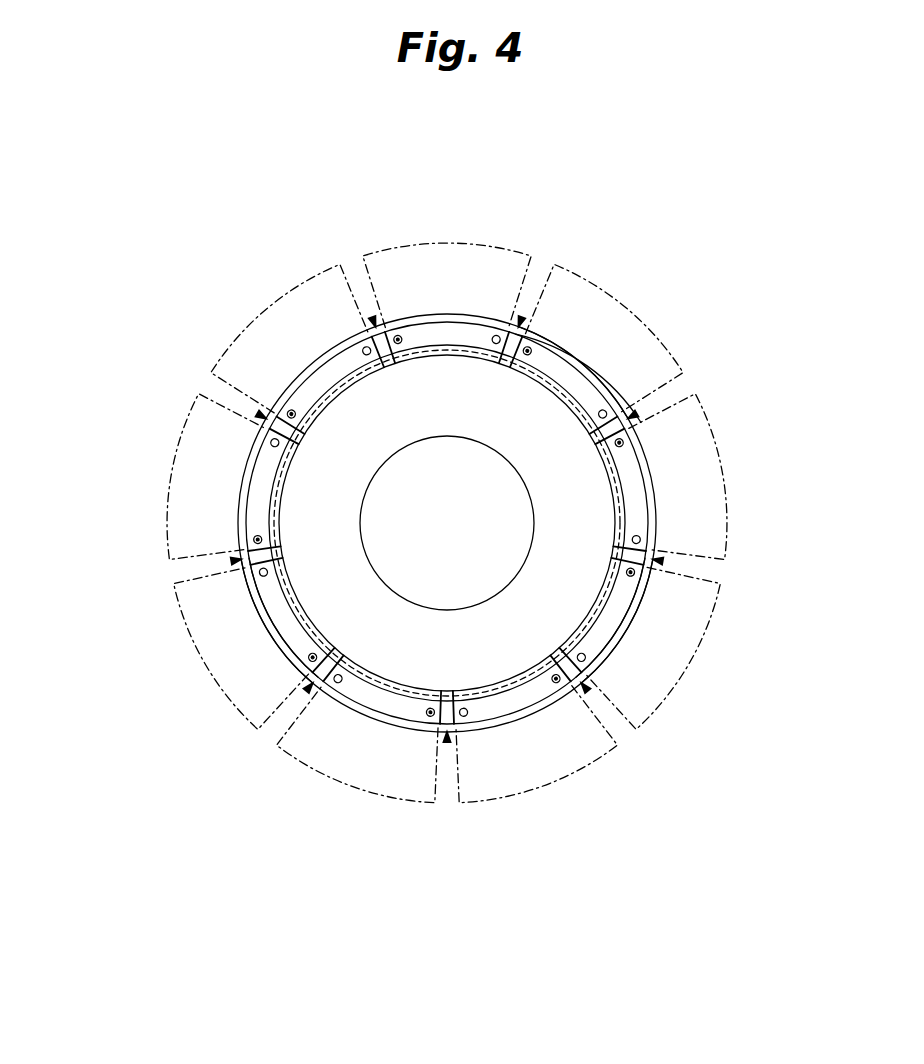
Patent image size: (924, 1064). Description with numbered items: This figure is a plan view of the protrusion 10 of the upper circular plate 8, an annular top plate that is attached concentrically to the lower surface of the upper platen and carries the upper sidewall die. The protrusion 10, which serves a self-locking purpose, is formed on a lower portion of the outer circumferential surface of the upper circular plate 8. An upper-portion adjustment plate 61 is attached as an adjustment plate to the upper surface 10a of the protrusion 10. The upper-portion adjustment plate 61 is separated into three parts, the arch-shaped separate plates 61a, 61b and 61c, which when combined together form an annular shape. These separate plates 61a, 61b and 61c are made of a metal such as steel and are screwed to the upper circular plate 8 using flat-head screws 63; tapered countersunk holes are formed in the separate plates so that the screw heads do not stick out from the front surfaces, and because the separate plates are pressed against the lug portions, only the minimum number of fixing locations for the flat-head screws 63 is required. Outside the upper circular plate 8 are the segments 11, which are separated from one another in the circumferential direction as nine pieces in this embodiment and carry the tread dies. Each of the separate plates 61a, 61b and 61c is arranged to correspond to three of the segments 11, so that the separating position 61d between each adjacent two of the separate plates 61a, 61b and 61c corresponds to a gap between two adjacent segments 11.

The upper circular plate 8 is at (335, 517).
The protrusion 10 is at (380, 362).
The upper surface of the protrusion 10a is at (395, 355).
The segments 11 is at (450, 243).
The upper-portion adjustment plate 61 is at (608, 377).
The arch-shaped separate plate 61a is at (554, 360).
The arch-shaped separate plate 61b is at (610, 620).
The arch-shaped separate plate 61c is at (300, 626).
The separating position 61d is at (373, 319).
The flat-head screws 63 is at (363, 348).